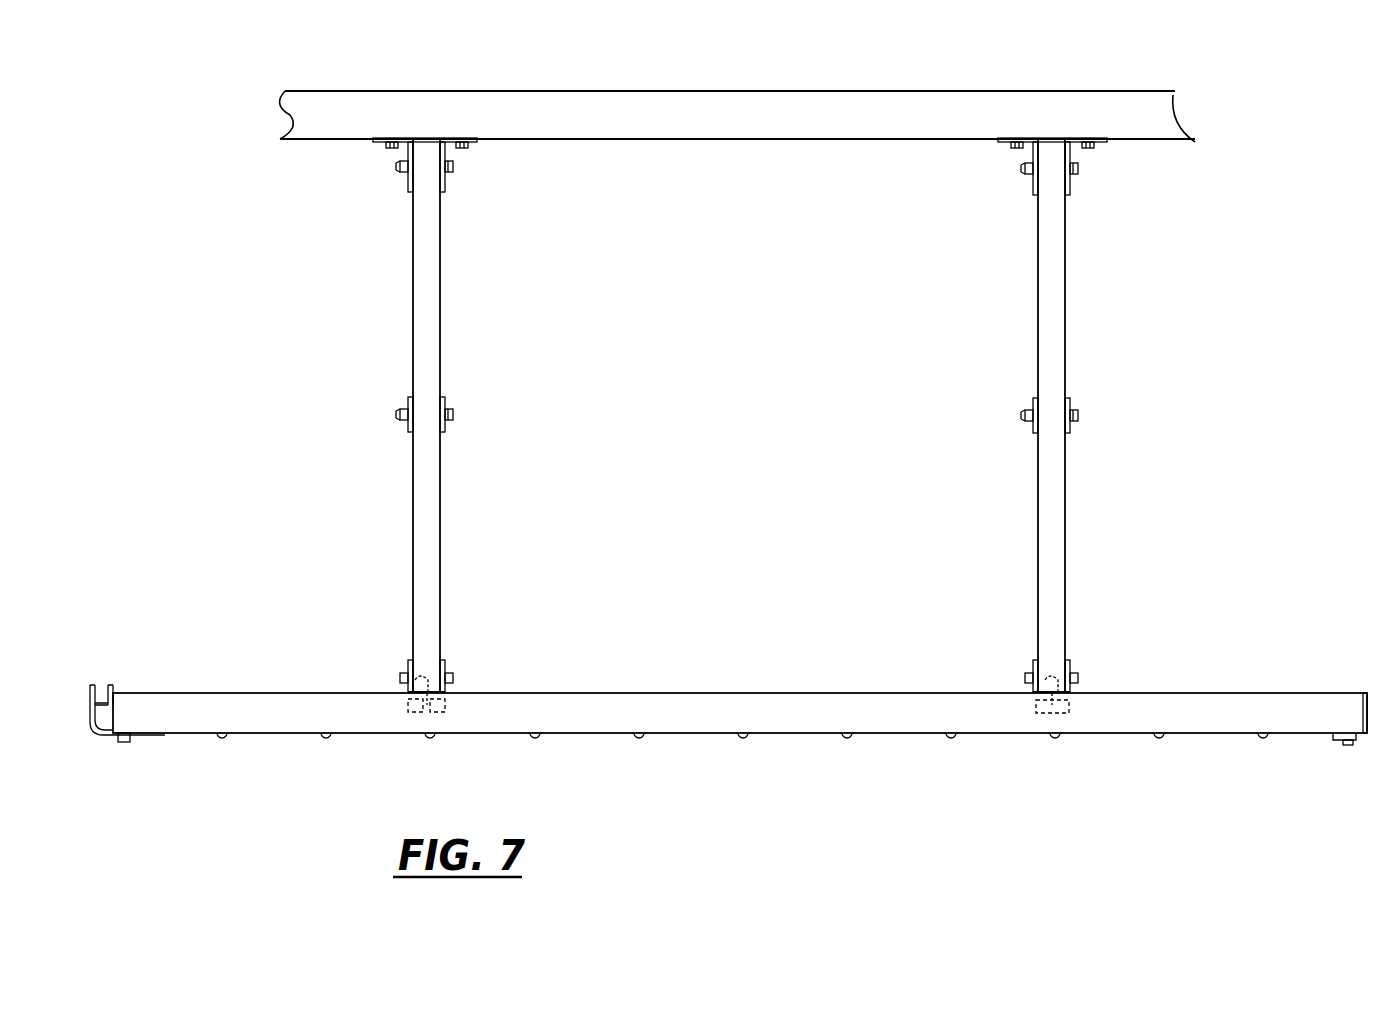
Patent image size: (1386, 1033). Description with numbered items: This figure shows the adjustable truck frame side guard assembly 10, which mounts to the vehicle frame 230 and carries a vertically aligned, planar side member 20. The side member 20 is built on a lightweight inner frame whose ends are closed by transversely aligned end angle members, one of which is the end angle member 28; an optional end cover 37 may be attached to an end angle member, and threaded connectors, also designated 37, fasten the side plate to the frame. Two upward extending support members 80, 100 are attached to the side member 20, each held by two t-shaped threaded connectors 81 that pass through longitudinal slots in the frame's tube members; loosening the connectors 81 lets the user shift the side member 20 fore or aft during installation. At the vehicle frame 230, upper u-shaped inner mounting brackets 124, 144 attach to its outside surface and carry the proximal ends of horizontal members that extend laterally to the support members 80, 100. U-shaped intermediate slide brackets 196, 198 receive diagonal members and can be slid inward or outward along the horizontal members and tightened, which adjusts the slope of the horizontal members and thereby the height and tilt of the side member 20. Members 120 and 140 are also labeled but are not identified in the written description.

The side guard assembly 10 is at (198, 164).
The side member 20 is at (275, 692).
The end angle member 28 is at (1376, 710).
The end cover 37 is at (113, 682).
The support member 80 is at (445, 662).
The t-shaped threaded connector 81 is at (420, 683).
The support member 100 is at (1072, 658).
The first post 120 is at (426, 532).
The upper inner mounting bracket 124 is at (385, 143).
The second post 140 is at (1044, 532).
The upper inner mounting bracket 144 is at (1005, 143).
The intermediate slide bracket 196 is at (1030, 398).
The intermediate slide bracket 198 is at (399, 403).
The vehicle frame 230 is at (690, 88).